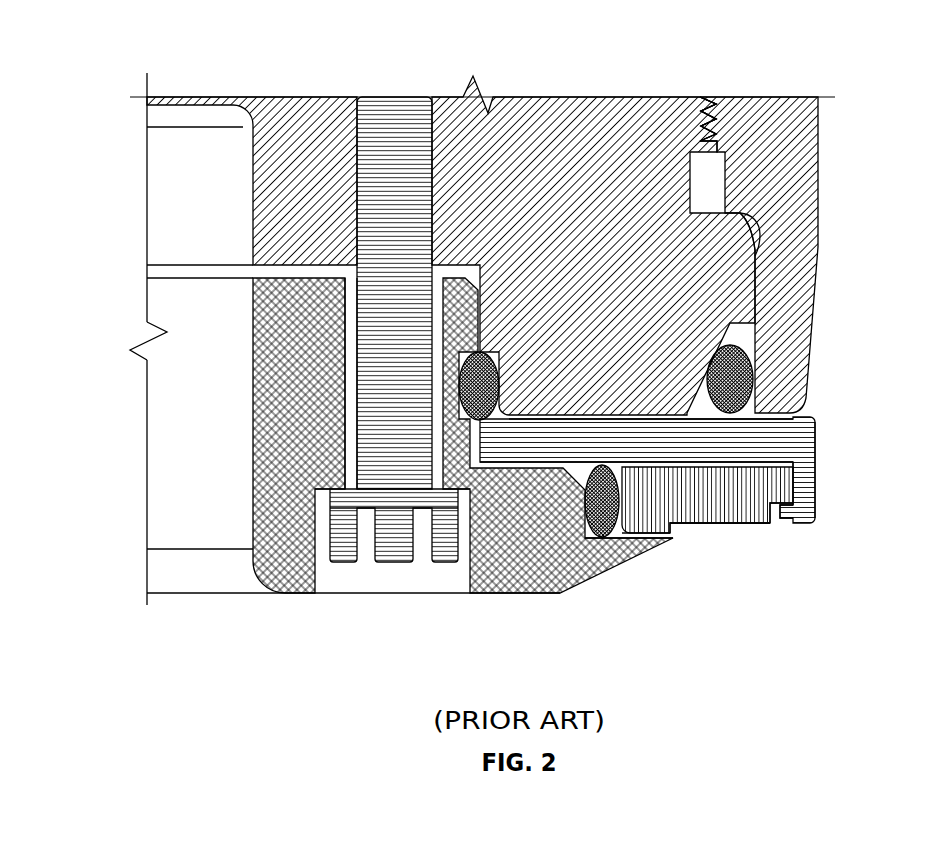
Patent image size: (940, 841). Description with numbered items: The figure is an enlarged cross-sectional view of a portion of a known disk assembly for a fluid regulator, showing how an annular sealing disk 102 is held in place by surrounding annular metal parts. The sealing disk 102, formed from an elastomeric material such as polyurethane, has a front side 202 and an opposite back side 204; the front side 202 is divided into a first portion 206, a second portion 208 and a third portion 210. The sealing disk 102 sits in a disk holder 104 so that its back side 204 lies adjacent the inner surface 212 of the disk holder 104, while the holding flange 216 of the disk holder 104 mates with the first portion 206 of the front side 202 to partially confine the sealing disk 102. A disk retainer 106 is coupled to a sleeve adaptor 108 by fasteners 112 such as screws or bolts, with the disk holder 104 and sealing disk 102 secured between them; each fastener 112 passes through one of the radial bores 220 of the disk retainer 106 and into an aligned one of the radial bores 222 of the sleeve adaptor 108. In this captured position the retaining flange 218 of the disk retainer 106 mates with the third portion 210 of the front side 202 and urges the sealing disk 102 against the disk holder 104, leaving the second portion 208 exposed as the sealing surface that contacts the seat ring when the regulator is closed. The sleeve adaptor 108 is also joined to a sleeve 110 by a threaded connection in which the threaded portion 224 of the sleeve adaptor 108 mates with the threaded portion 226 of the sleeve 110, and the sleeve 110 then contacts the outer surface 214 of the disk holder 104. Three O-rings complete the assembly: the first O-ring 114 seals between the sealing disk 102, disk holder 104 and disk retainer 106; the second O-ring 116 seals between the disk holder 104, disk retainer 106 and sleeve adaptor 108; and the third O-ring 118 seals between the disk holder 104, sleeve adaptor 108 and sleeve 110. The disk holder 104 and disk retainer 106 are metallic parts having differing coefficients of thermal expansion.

The sealing disk 102 is at (742, 503).
The disk holder 104 is at (650, 430).
The disk retainer 106 is at (578, 565).
The sleeve adaptor 108 is at (548, 115).
The sleeve 110 is at (792, 170).
The fasteners 112 is at (405, 115).
The first O-ring 114 is at (598, 512).
The second O-ring 116 is at (480, 425).
The third O-ring 118 is at (732, 362).
The front side 202 is at (738, 524).
The back side 204 is at (785, 474).
The first portion 206 is at (812, 517).
The second portion 208 is at (748, 524).
The third portion 210 is at (668, 527).
The inner surface 212 is at (720, 462).
The outer surface 214 is at (745, 432).
The holding flange 216 is at (780, 523).
The retaining flange 218 is at (650, 540).
The radial bores 220 is at (352, 410).
The radial bores 222 is at (357, 127).
The threaded portion 224 is at (705, 110).
The threaded portion 226 is at (713, 100).